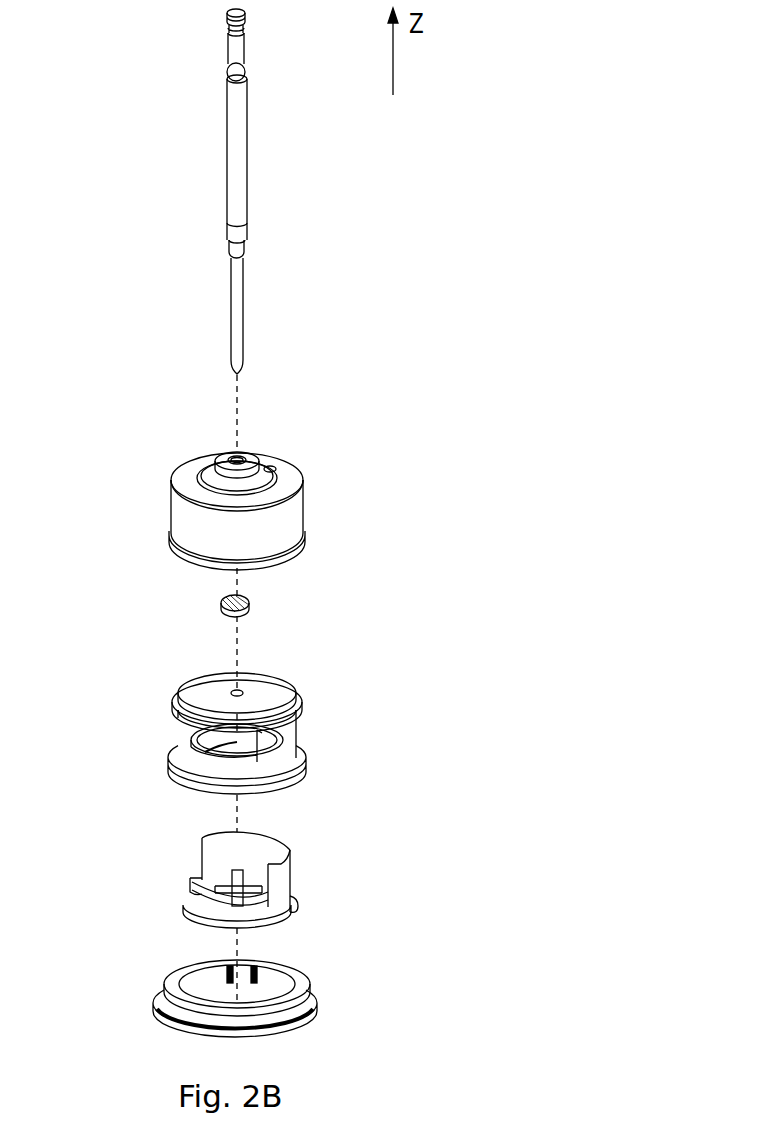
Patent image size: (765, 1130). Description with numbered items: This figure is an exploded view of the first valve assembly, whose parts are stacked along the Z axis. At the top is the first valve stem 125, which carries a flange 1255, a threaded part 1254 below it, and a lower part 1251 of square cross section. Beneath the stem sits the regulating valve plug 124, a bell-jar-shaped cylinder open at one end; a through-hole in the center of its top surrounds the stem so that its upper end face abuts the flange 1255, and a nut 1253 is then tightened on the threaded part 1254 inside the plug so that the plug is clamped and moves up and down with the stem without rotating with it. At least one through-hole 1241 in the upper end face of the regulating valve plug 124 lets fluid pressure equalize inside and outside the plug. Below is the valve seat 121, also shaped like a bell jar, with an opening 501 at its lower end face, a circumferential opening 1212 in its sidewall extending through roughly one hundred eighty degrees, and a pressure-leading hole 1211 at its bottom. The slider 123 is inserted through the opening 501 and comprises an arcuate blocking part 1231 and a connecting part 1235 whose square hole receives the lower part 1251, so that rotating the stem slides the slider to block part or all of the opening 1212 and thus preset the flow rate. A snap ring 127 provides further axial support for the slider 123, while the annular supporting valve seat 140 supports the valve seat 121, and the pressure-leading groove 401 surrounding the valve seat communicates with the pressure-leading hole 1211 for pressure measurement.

The first valve stem 125 is at (242, 158).
The flange 1255 is at (230, 243).
The threaded part 1254 is at (244, 249).
The lower part 1251 is at (241, 325).
The regulating valve plug 124 is at (293, 519).
The through-hole 1241 is at (272, 471).
The nut 1253 is at (252, 606).
The valve seat 121 is at (283, 737).
The pressure-leading hole 1211 is at (178, 741).
The opening 1212 is at (163, 728).
The opening 501 is at (228, 753).
The slider 123 is at (261, 877).
The blocking part 1231 is at (284, 882).
The connecting part 1235 is at (190, 889).
The snap ring 127 is at (292, 908).
The pressure-leading groove 401 is at (310, 975).
The supporting valve seat 140 is at (310, 1010).